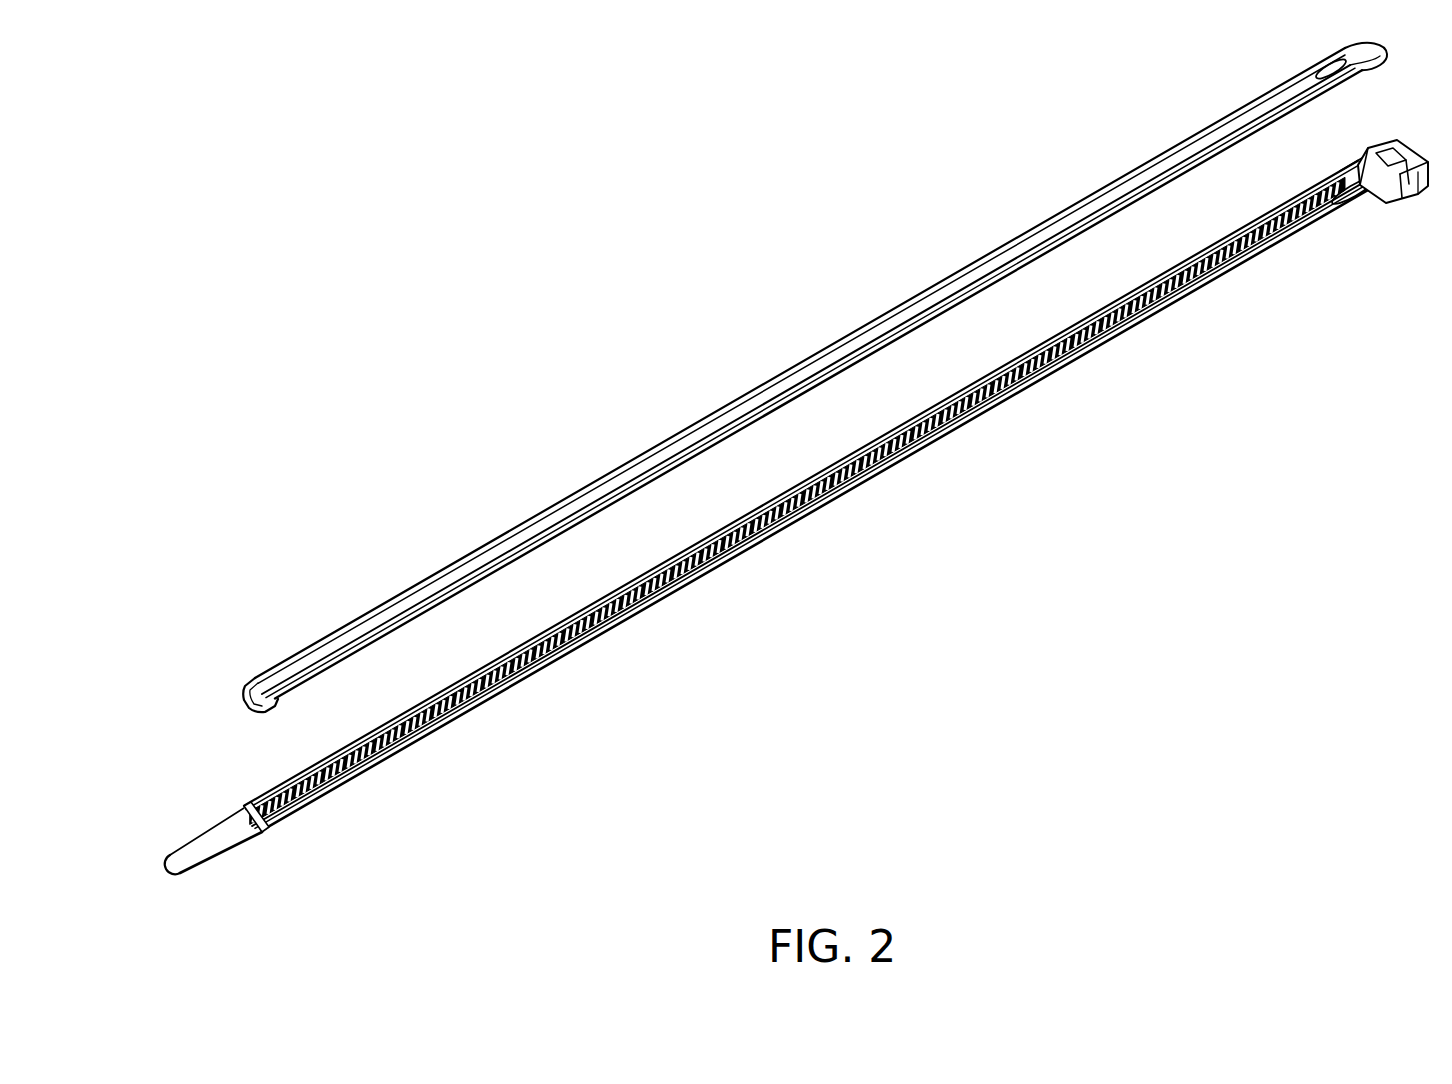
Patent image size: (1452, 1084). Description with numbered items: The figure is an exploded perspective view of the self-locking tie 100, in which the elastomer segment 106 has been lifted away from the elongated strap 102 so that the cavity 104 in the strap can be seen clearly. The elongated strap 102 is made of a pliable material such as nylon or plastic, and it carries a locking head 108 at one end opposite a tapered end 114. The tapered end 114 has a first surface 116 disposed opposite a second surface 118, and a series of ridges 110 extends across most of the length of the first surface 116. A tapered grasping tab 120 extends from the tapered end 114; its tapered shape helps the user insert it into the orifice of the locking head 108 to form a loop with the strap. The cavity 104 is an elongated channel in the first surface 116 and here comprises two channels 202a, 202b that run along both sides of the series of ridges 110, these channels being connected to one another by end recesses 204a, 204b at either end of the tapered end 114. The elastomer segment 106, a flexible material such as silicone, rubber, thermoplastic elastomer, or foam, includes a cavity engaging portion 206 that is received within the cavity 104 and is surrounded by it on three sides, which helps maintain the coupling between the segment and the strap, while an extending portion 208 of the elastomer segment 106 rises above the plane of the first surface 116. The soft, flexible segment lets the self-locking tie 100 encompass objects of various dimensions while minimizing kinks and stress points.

The self-locking tie 100 is at (522, 196).
The elongated strap 102 is at (783, 523).
The cavity 104 is at (1368, 200).
The elastomer segment 106 is at (852, 337).
The locking head 108 is at (1417, 196).
The series of ridges 110 is at (770, 538).
The tapered end 114 is at (236, 812).
The first surface 116 is at (215, 843).
The second surface 118 is at (560, 690).
The tapered grasping tab 120 is at (250, 833).
The channel 202a is at (1092, 353).
The channel 202b is at (1127, 338).
The end recess 204a is at (1347, 196).
The end recess 204b is at (262, 826).
The cavity engaging portion 206 is at (423, 737).
The extending portion 208 is at (400, 717).